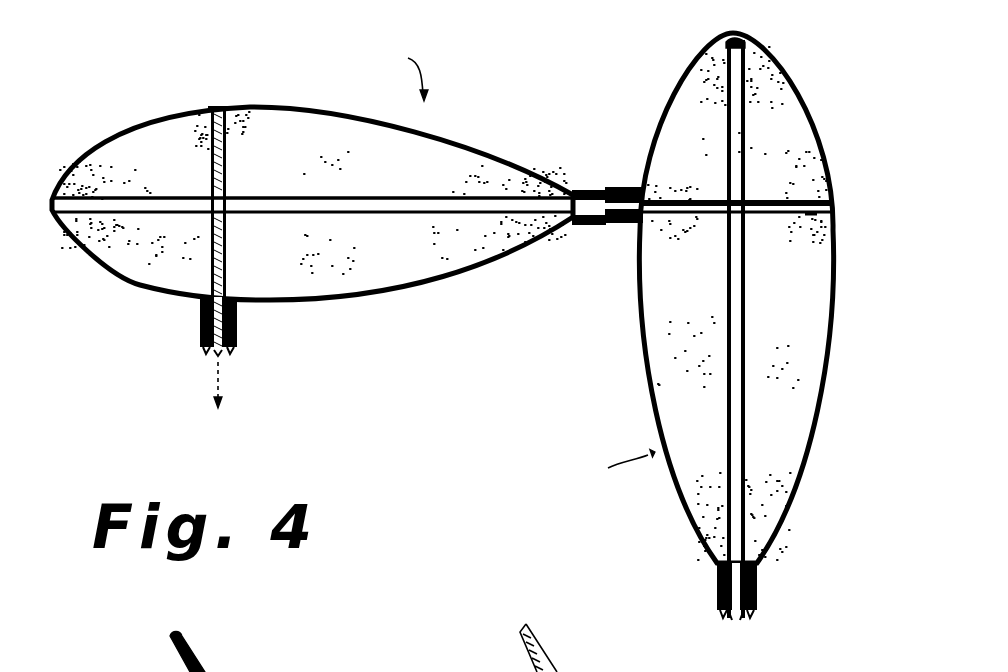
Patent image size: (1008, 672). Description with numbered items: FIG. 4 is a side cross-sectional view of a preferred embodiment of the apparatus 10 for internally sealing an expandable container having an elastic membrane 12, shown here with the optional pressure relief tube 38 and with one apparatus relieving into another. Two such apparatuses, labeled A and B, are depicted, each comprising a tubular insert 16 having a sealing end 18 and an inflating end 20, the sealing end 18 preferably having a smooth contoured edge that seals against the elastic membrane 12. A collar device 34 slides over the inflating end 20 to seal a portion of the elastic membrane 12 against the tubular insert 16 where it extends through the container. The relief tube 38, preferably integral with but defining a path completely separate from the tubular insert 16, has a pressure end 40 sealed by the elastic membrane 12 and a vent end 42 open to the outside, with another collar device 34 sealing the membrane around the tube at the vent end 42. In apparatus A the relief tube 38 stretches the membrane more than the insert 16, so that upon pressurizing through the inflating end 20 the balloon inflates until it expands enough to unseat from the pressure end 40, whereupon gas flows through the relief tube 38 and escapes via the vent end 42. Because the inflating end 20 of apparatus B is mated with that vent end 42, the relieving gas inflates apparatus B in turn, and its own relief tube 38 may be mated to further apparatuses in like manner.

The apparatus 10 is at (131, 92).
The elastic membrane 12 is at (405, 296).
The tubular insert 16 is at (467, 200).
The sealing end 18 is at (707, 48).
The inflating end 20 is at (590, 188).
The collar device 34 is at (604, 188).
The pressure relief tube 38 is at (208, 168).
The pressure end 40 is at (229, 110).
The vent end 42 is at (222, 353).